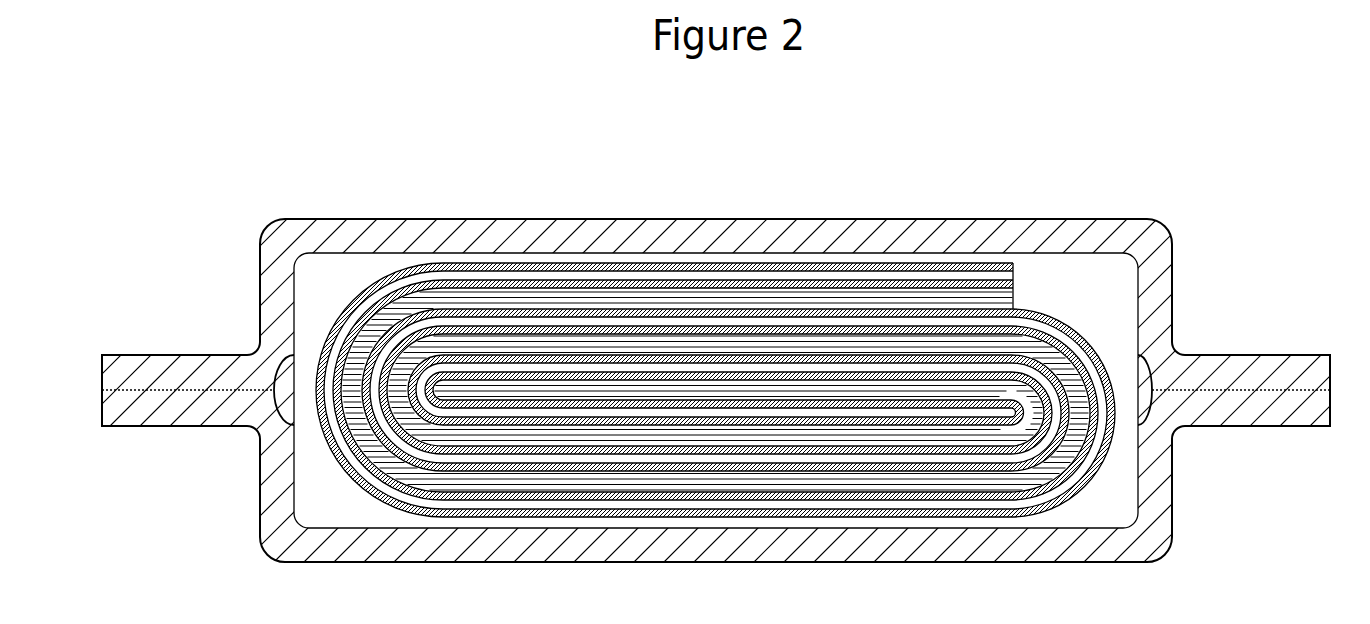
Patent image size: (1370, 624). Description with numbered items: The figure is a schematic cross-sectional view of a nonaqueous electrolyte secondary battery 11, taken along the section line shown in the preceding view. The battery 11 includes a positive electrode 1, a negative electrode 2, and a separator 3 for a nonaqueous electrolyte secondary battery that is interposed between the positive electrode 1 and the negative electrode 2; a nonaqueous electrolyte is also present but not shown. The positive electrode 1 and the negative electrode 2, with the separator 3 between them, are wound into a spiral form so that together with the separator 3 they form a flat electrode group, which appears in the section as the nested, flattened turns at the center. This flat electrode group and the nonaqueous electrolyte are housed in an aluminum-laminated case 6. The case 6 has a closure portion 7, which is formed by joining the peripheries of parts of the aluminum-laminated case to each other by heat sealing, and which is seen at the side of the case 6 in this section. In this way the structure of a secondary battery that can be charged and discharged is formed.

The positive electrode 1 is at (996, 300).
The negative electrode 2 is at (1018, 272).
The separator 3 is at (946, 261).
The aluminum-laminated case 6 is at (1152, 215).
The closure portion 7 is at (1256, 356).
The nonaqueous electrolyte secondary battery 11 is at (685, 320).